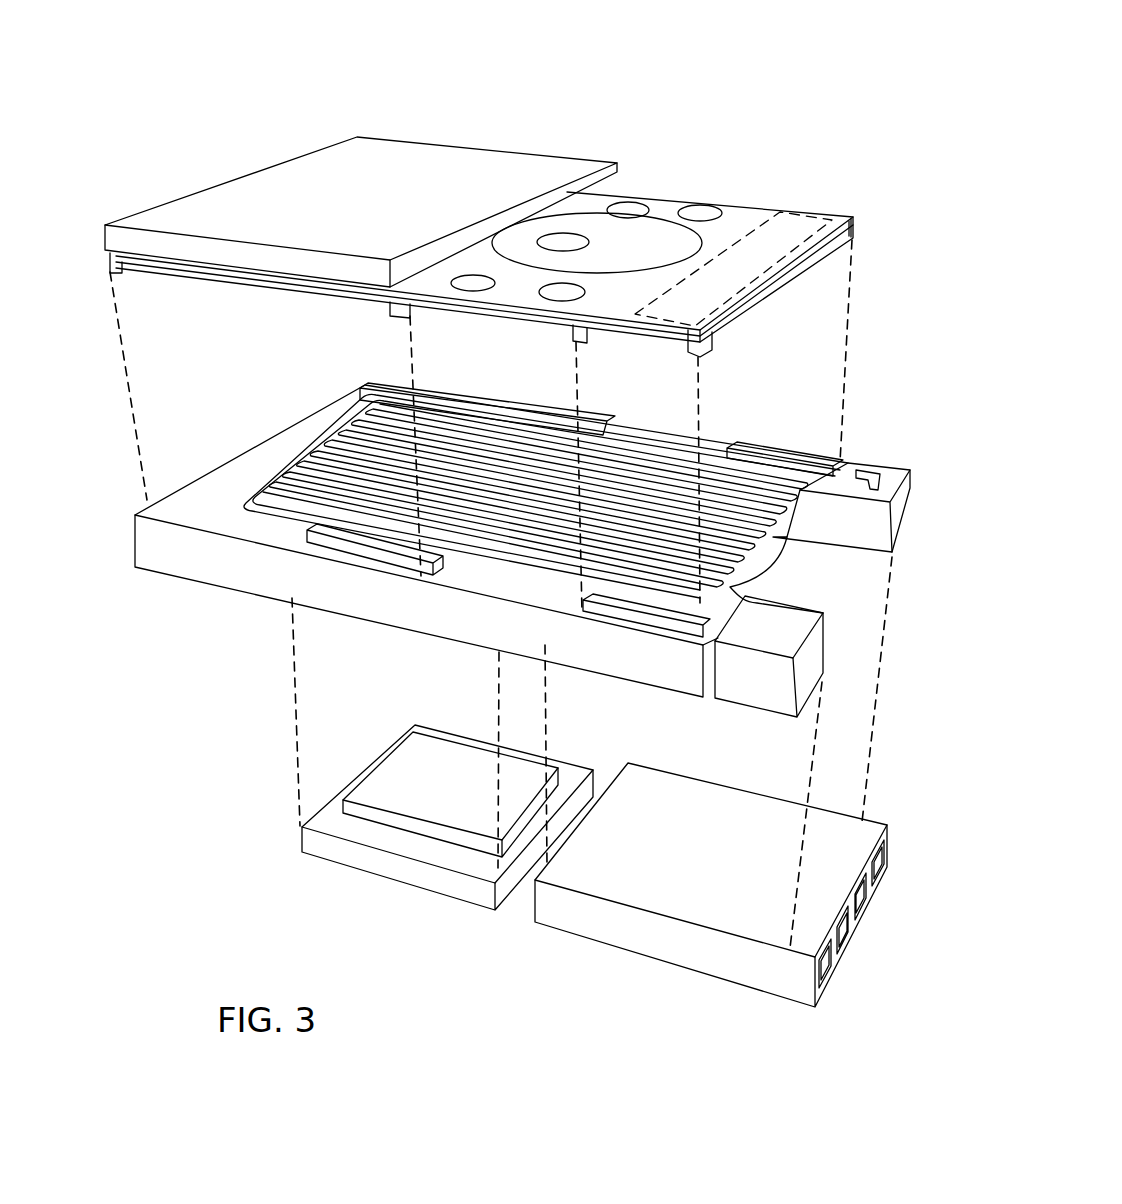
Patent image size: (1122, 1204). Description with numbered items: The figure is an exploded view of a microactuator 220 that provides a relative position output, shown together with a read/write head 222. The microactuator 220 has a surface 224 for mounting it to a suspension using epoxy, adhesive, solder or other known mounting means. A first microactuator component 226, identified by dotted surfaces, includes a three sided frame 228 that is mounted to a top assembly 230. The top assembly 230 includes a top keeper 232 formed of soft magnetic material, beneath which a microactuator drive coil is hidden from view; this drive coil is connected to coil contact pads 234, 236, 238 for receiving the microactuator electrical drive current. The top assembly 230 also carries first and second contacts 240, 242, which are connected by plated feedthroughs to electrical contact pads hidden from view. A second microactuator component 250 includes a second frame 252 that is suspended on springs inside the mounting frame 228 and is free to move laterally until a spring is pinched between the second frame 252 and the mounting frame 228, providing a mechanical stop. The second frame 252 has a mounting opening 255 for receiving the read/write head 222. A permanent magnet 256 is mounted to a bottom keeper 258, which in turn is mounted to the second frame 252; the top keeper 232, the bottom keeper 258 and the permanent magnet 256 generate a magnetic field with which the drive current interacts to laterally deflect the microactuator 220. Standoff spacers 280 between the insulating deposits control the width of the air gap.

The microactuator 220 is at (733, 90).
The read/write head 222 is at (630, 928).
The surface 224 is at (793, 210).
The first microactuator component 226 is at (165, 482).
The three sided frame 228 is at (165, 545).
The top assembly 230 is at (361, 180).
The top keeper 232 is at (250, 152).
The coil contact pad 234 is at (625, 208).
The coil contact pad 236 is at (559, 240).
The coil contact pad 238 is at (473, 280).
The first contact 240 is at (550, 288).
The second contact 242 is at (699, 212).
The second microactuator component 250 is at (742, 712).
The second frame 252 is at (902, 510).
The mounting opening 255 is at (830, 589).
The permanent magnet 256 is at (428, 768).
The bottom keeper 258 is at (335, 852).
The standoff spacers 280 is at (395, 312).